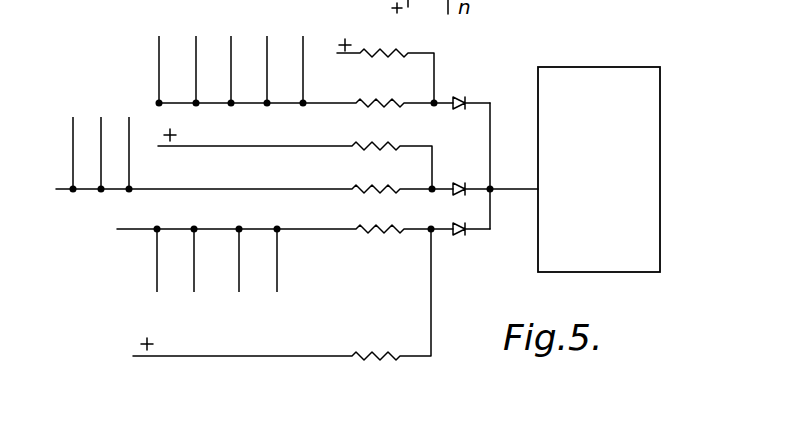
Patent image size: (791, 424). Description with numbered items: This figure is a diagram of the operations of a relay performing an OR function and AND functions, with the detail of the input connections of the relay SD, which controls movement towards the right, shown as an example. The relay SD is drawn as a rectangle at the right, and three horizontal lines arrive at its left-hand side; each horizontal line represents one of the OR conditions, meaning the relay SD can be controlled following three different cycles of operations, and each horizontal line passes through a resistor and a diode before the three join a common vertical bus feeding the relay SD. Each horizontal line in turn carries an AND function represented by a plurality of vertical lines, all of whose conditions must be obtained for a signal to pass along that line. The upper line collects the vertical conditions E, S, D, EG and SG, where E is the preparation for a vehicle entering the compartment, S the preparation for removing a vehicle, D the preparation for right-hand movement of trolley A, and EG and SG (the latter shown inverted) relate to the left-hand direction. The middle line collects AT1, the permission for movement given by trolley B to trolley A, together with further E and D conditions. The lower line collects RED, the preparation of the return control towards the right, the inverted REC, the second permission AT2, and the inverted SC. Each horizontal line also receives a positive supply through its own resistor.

The right-hand direction control relay SD is at (599, 169).
The vehicle entering preparation signal E is at (152, 6).
The vehicle removal preparation signal S is at (195, 58).
The right-hand movement preparation signal D is at (231, 58).
The left-hand entering preparation signal EG is at (267, 58).
The left-hand direction control relay signal SG is at (292, 6).
The first movement permission signal AT1 is at (94, 141).
The right-hand return control preparation signal RED is at (150, 274).
The return control preparation signal REC is at (181, 295).
The second movement permission signal AT2 is at (238, 274).
The inverted control signal SC is at (288, 295).